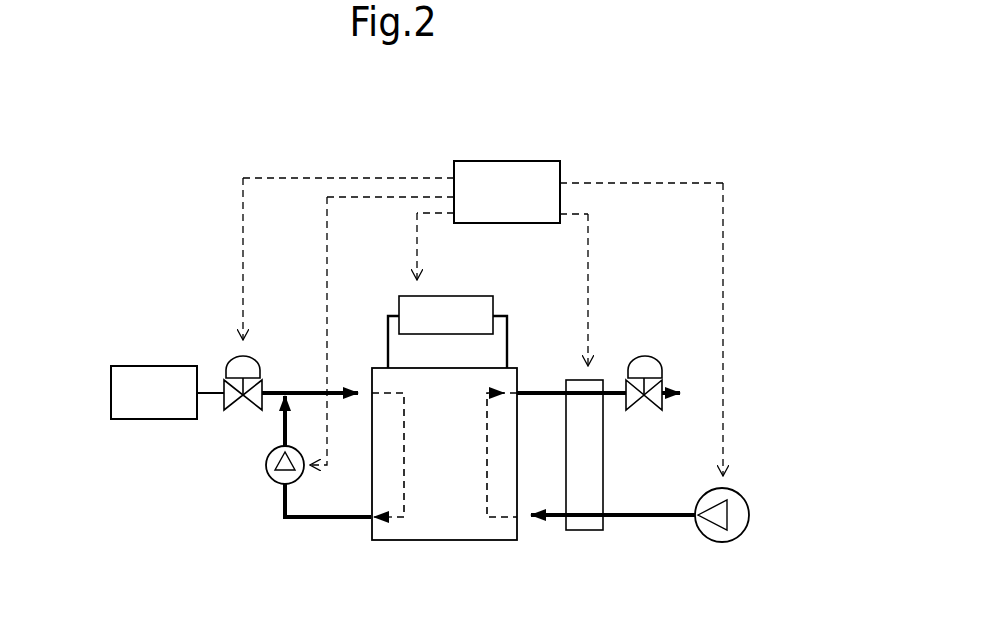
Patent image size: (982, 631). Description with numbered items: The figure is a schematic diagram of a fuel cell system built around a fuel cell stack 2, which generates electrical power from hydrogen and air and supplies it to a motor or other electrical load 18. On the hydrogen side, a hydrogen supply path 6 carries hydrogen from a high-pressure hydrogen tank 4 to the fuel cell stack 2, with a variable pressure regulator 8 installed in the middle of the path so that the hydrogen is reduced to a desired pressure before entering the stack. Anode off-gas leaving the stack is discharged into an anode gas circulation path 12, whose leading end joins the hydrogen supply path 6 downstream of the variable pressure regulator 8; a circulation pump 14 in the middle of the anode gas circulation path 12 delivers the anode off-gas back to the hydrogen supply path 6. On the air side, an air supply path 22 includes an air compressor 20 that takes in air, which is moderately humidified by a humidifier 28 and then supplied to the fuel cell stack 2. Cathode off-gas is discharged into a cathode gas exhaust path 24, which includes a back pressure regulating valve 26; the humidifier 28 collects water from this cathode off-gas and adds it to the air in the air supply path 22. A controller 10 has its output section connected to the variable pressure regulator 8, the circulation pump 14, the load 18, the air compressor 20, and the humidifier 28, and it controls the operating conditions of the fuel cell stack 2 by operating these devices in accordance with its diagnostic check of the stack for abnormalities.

The fuel cell stack 2 is at (441, 541).
The high-pressure hydrogen tank 4 is at (152, 366).
The hydrogen supply path 6 is at (281, 390).
The variable pressure regulator 8 is at (232, 357).
The controller 10 is at (507, 160).
The anode gas circulation path 12 is at (314, 520).
The circulation pump 14 is at (264, 469).
The load 18 is at (460, 295).
The air compressor 20 is at (722, 543).
The air supply path 22 is at (636, 517).
The cathode gas exhaust path 24 is at (541, 391).
The back pressure regulating valve 26 is at (639, 357).
The humidifier 28 is at (577, 531).